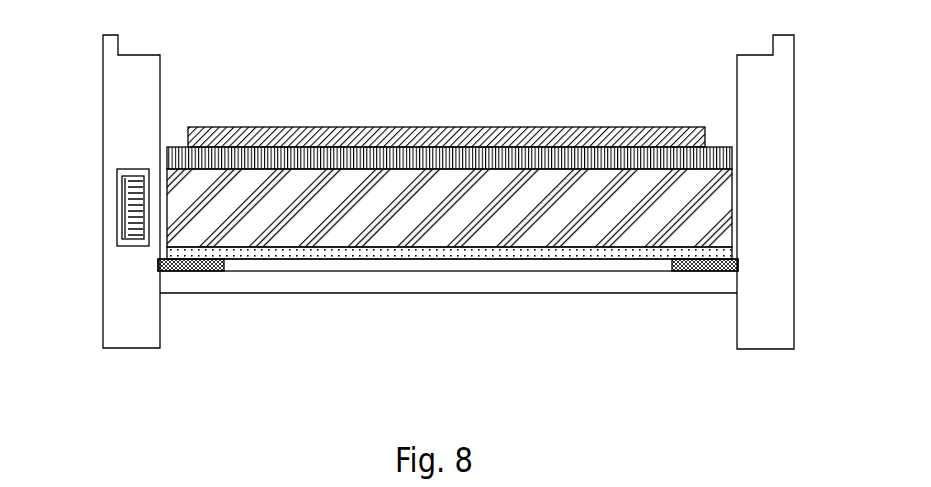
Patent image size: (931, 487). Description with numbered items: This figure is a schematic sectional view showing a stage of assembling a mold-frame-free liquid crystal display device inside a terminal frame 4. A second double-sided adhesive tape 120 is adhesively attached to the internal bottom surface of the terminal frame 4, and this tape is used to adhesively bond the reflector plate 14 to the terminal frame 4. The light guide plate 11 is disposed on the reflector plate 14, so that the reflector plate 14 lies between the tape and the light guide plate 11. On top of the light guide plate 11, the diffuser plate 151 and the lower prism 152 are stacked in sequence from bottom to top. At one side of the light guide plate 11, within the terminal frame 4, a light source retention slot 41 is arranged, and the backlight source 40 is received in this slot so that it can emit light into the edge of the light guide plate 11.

The terminal frame 4 is at (776, 273).
The light guide plate 11 is at (452, 213).
The reflector plate 14 is at (343, 252).
The second double-sided adhesive tape 120 is at (193, 272).
The diffuser plate 151 is at (292, 157).
The lower prism 152 is at (403, 138).
The backlight source 40 is at (122, 241).
The light source retention slot 41 is at (118, 207).